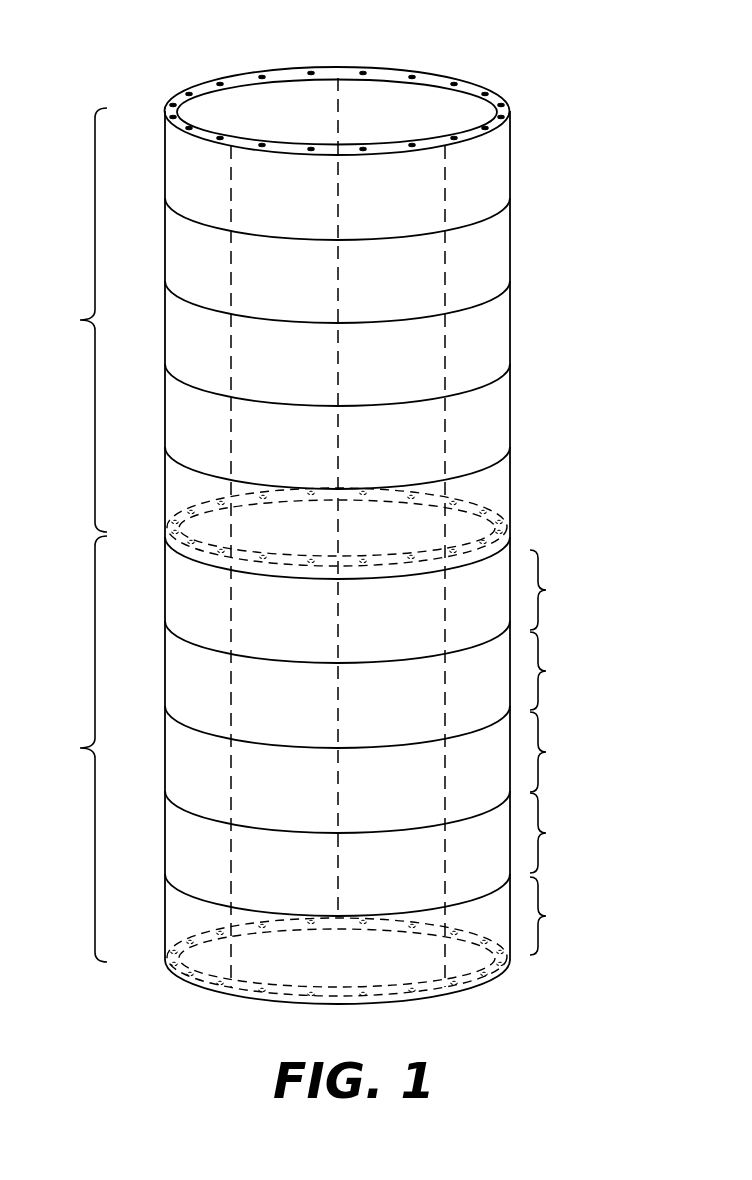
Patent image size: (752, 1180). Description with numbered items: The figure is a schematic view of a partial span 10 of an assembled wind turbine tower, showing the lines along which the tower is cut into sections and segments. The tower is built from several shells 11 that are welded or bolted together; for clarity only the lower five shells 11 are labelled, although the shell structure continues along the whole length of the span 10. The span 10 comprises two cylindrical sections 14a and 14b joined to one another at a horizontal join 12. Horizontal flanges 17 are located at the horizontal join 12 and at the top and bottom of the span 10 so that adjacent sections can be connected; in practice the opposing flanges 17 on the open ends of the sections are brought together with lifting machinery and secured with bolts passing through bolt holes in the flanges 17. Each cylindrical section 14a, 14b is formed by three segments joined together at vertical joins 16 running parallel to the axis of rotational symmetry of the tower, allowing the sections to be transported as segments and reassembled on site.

The span 10 is at (583, 53).
The shell 11 is at (557, 752).
The horizontal join 12 is at (206, 500).
The cylindrical section 14a is at (274, 749).
The cylindrical section 14b is at (274, 320).
The vertical join 16 is at (346, 86).
The horizontal flange 17 is at (238, 72).